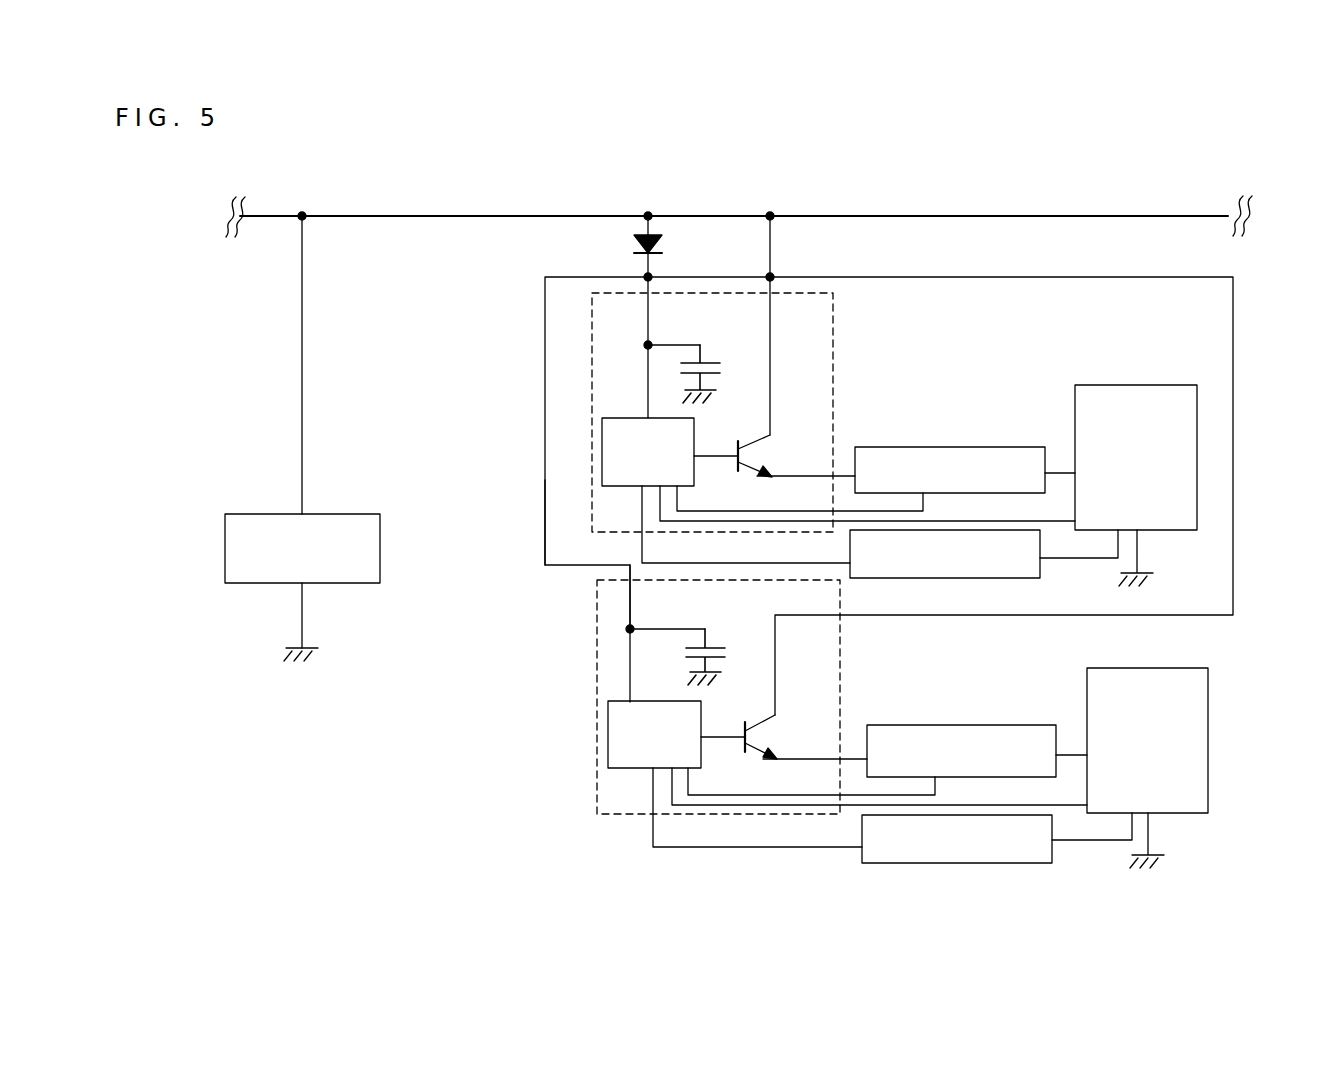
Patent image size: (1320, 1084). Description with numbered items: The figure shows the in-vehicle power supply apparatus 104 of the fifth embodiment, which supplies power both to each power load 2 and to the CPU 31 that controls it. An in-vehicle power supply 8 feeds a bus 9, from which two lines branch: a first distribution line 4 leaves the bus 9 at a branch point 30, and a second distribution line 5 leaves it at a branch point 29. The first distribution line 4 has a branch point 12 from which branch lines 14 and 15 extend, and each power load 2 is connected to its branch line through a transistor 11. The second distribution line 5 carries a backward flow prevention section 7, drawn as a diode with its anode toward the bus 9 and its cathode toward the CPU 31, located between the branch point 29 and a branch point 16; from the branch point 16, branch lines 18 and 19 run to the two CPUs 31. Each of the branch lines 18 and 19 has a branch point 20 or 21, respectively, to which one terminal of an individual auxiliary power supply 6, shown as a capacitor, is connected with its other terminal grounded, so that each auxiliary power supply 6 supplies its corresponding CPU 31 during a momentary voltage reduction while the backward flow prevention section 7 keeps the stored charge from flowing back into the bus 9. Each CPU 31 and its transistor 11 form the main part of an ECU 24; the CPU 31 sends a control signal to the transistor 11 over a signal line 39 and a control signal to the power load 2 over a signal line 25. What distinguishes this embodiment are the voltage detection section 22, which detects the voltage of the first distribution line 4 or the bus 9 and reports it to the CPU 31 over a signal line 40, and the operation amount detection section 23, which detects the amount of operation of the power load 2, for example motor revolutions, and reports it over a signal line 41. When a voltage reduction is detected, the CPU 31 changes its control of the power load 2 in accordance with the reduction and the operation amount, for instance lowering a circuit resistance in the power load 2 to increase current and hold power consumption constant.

The power load 2 is at (1128, 385).
The first distribution line 4 is at (788, 218).
The second distribution line 5 is at (612, 221).
The auxiliary power supply 6 is at (713, 360).
The backward flow prevention section 7 is at (652, 232).
The in-vehicle power supply 8 is at (348, 514).
The bus 9 is at (425, 214).
The transistor 11 is at (770, 452).
The branch point 12 is at (773, 262).
The branch line 14 is at (772, 358).
The branch line 15 is at (905, 277).
The branch point 16 is at (652, 272).
The branch line 18 is at (645, 388).
The branch line 19 is at (545, 522).
The branch point 20 is at (645, 347).
The branch point 21 is at (625, 636).
The voltage detection section 22 is at (948, 447).
The operation amount detection section 23 is at (985, 580).
The ECU 24 is at (844, 349).
The signal line 25 is at (737, 523).
The branch point 29 is at (648, 214).
The branch point 30 is at (771, 214).
The CPU 31 is at (602, 442).
The signal line 39 is at (722, 458).
The signal line 40 is at (828, 515).
The signal line 41 is at (817, 565).
The in-vehicle power supply apparatus 104 is at (734, 187).